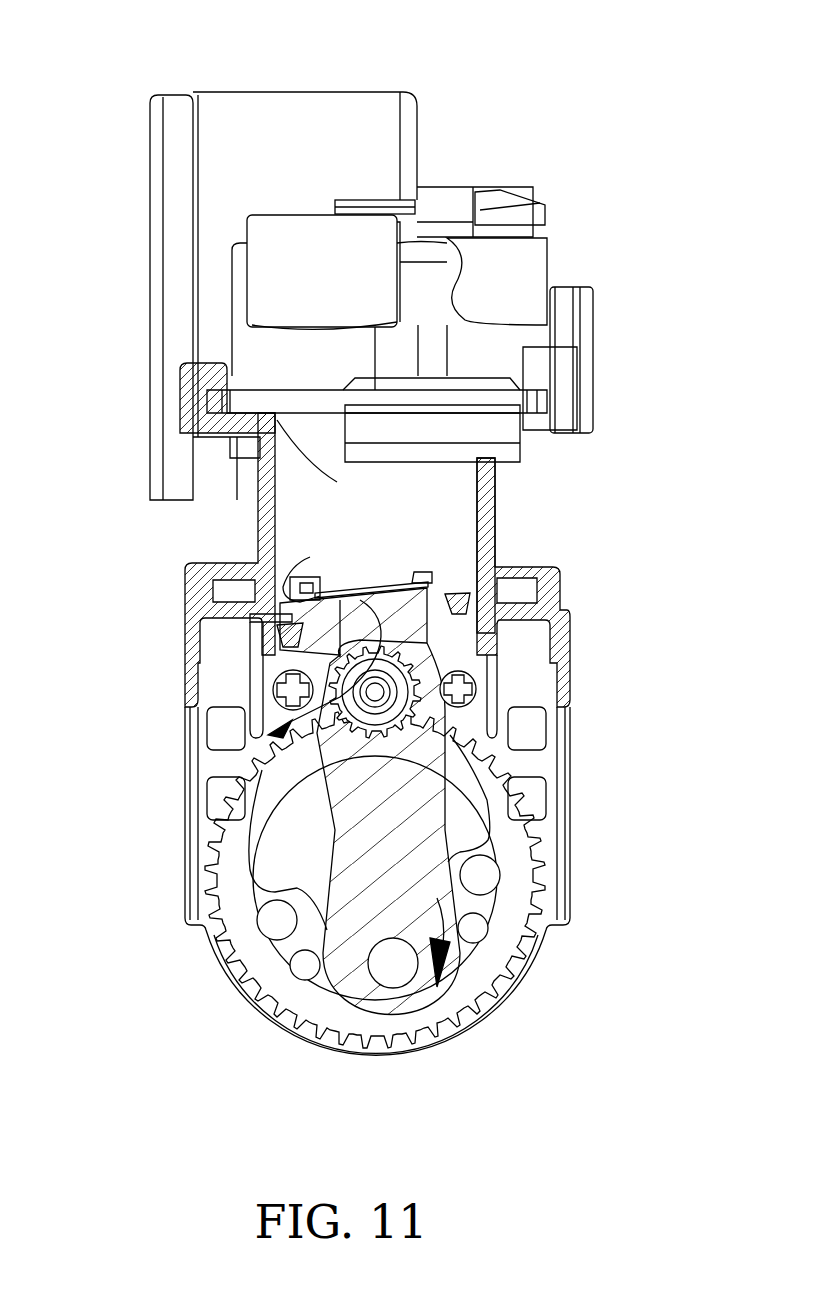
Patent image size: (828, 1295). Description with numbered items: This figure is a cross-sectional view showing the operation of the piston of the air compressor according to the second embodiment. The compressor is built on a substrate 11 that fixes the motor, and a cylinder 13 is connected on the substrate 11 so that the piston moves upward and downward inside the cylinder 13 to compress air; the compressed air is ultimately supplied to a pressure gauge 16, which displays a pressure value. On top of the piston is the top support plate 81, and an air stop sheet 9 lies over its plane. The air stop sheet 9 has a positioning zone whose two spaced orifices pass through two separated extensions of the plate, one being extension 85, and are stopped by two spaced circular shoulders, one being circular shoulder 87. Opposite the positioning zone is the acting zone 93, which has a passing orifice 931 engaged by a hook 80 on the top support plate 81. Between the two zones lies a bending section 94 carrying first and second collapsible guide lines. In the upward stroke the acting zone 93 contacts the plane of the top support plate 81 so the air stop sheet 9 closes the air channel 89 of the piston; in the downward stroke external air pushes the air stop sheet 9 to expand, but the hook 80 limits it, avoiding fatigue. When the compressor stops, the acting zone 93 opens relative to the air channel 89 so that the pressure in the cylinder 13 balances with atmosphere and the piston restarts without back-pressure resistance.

The pressure gauge 16 is at (247, 146).
The bending section 94 is at (403, 580).
The air stop sheet 9 is at (373, 582).
The acting zone 93 is at (297, 577).
The passing orifice 931 is at (290, 578).
The hook 80 is at (282, 592).
The top support plate 81 is at (295, 615).
The substrate 11 is at (213, 690).
The cylinder 13 is at (495, 483).
The extension 85 is at (430, 572).
The circular shoulder 87 is at (470, 596).
The air channel 89 is at (393, 623).